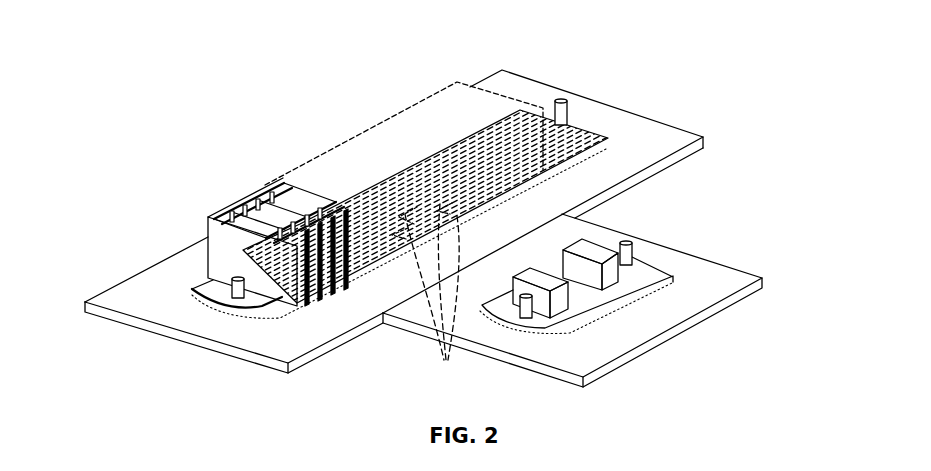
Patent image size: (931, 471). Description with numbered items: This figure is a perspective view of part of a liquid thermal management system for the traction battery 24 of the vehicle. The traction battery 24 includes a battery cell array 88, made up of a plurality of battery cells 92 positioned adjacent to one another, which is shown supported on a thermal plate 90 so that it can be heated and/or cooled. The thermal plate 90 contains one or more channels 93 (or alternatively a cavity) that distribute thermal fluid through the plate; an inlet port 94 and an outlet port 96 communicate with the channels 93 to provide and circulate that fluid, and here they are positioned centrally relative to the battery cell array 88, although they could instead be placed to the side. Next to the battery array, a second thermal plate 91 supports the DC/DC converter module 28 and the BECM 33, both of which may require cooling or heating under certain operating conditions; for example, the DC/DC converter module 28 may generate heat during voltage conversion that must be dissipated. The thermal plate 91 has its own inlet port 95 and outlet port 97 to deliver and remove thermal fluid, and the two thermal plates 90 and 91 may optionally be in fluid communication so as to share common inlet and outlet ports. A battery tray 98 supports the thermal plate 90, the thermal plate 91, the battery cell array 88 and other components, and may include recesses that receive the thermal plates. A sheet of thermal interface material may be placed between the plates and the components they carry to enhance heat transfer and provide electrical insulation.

The traction battery 24 is at (313, 131).
The battery cell array 88 is at (405, 106).
The battery cells 92 is at (265, 190).
The battery tray 98 is at (676, 133).
The inlet port 94 is at (567, 122).
The BECM 33 is at (580, 243).
The DC/DC converter module 28 is at (533, 270).
The inlet port 95 is at (627, 242).
The outlet port 97 is at (519, 300).
The thermal plate 91 is at (592, 306).
The outlet port 96 is at (244, 300).
The thermal plate 90 is at (277, 304).
The channels 93 is at (425, 294).